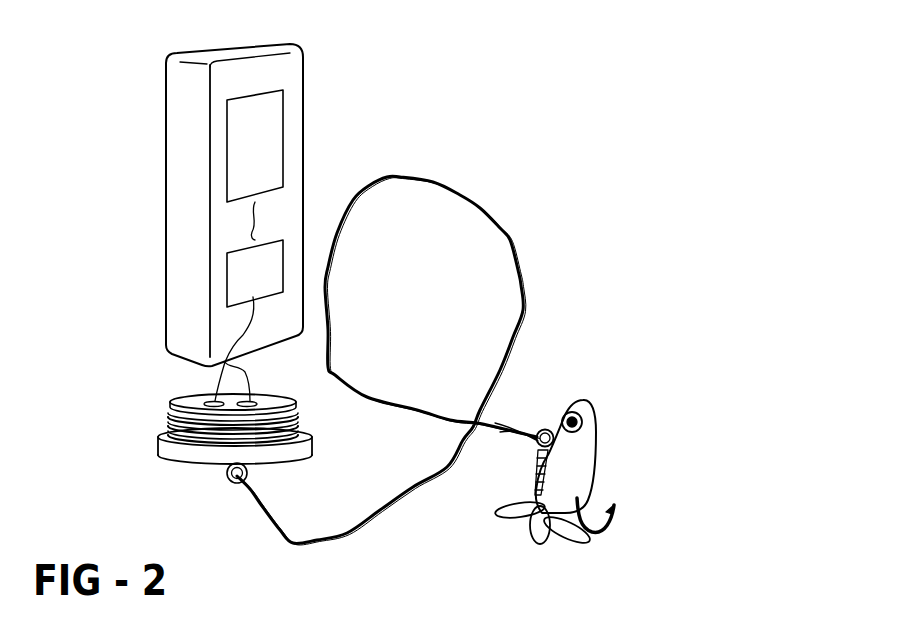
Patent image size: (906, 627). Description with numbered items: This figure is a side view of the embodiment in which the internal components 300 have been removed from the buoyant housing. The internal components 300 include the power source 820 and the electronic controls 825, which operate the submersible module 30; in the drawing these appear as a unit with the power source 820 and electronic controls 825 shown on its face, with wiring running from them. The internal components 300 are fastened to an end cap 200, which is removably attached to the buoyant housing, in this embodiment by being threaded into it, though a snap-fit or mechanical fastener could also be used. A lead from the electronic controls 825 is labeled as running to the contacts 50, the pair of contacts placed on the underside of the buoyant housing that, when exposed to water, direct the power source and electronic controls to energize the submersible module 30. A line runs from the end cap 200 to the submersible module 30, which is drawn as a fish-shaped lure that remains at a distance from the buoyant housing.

The internal components 300 is at (205, 265).
The power source 820 is at (277, 145).
The electronic controls 825 is at (277, 282).
The contacts 50 is at (283, 264).
The end cap 200 is at (205, 450).
The submersible module 30 is at (634, 394).